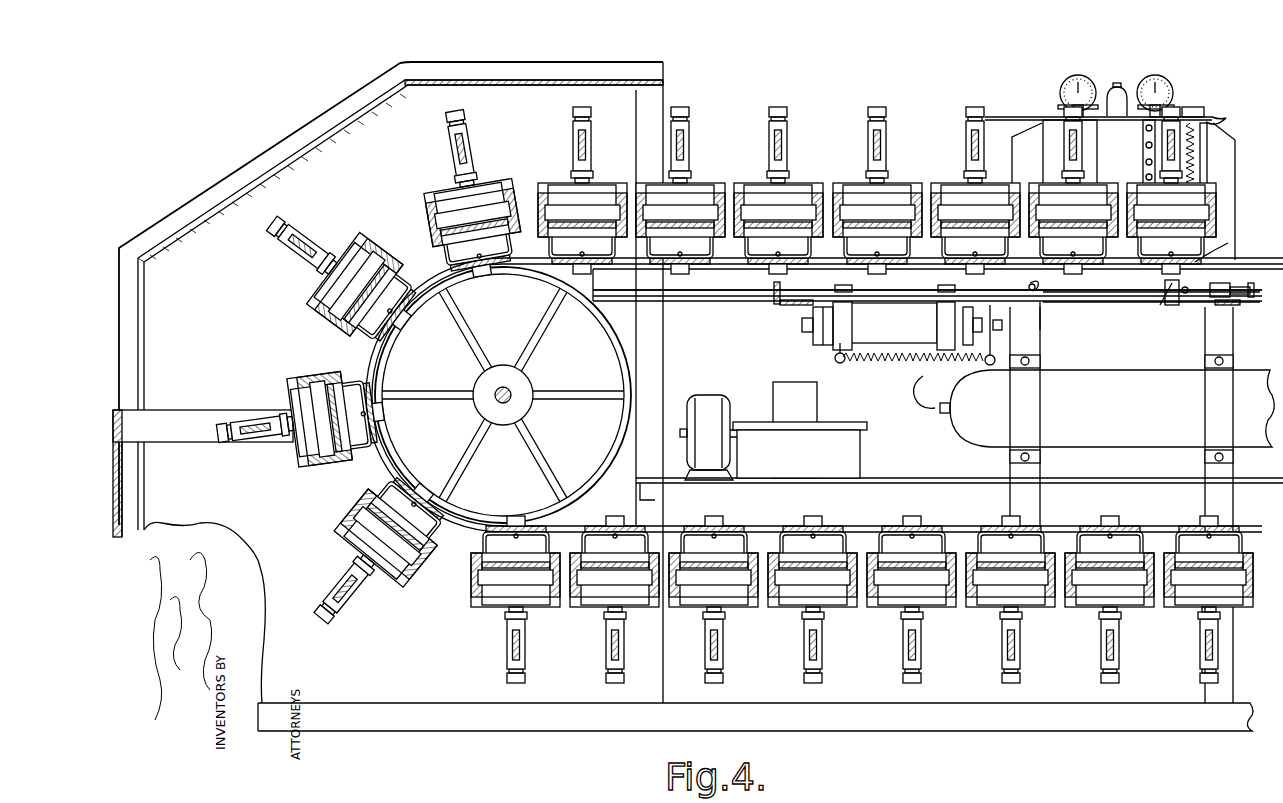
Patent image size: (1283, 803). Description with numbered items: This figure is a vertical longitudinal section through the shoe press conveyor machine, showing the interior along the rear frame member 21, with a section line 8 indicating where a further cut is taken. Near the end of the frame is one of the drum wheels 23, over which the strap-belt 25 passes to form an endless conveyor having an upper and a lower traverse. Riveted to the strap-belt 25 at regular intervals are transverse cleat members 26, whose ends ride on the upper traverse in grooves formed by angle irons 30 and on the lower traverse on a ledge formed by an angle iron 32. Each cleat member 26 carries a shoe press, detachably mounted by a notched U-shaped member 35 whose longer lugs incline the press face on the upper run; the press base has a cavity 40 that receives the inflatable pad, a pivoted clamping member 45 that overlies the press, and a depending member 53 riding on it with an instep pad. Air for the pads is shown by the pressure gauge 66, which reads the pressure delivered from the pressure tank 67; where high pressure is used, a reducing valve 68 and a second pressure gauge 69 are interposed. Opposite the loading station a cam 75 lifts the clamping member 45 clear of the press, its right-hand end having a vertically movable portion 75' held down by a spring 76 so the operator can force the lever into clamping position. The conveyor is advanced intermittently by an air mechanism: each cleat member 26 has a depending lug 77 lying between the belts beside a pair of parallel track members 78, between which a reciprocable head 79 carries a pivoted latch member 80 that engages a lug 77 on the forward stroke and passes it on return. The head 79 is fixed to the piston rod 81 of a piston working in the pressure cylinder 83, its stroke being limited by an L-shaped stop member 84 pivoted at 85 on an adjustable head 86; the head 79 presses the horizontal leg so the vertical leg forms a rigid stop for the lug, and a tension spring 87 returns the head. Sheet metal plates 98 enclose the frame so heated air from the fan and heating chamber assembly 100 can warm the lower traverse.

The section line 8 is at (128, 256).
The rear frame member 21 is at (766, 300).
The drum wheel 23 is at (393, 453).
The strap-belt 25 is at (585, 523).
The cleat member 26 is at (378, 337).
The angle iron 30 is at (748, 290).
The angle iron 32 is at (770, 396).
The notched U-shaped member 35 is at (452, 270).
The cavity 40 is at (593, 208).
The clamping member 45 is at (285, 250).
The depending member 53 is at (320, 226).
The pressure gauge 66 is at (1088, 70).
The pressure tank 67 is at (1107, 505).
The reducing valve 68 is at (1118, 86).
The second pressure gauge 69 is at (1158, 80).
The cam 75 is at (1110, 166).
The vertically movable portion 75' is at (1205, 87).
The spring 76 is at (1195, 133).
The lug 77 is at (405, 322).
The track member 78 is at (1108, 302).
The reciprocable head 79 is at (1045, 310).
The pivoted latch member 80 is at (1028, 283).
The piston rod 81 is at (1003, 325).
The pressure cylinder 83 is at (887, 325).
The L-shaped stop member 84 is at (1230, 246).
The pivot 85 is at (1185, 294).
The adjustable head 86 is at (1168, 305).
The tension spring 87 is at (900, 358).
The sheet metal plate 98 is at (566, 80).
The fan and heating chamber assembly 100 is at (773, 425).